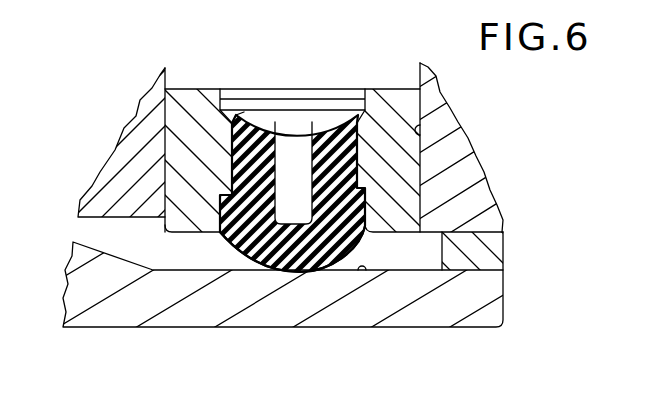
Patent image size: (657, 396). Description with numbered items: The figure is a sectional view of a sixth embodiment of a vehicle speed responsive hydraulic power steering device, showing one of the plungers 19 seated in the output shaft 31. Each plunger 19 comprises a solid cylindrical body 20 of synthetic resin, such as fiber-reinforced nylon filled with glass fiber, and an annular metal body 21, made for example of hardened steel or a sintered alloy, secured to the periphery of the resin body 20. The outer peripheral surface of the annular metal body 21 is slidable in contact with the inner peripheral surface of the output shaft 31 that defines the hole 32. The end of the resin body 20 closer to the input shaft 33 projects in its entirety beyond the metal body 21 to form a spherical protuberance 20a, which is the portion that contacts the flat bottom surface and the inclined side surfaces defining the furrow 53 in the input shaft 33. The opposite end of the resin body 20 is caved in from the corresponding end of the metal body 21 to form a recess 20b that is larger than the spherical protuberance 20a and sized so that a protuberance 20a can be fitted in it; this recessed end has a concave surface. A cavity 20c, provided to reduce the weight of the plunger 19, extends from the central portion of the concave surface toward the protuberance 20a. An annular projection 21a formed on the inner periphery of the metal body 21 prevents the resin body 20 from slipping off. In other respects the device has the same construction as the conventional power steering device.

The plunger 19 is at (412, 192).
The solid cylindrical body 20 is at (341, 197).
The spherical protuberance 20a is at (257, 266).
The recess 20b is at (250, 120).
The cavity 20c is at (312, 170).
The annular metal body 21 is at (359, 193).
The annular projection 21a is at (367, 172).
The output shaft 31 is at (122, 167).
The hole 32 is at (425, 122).
The input shaft 33 is at (487, 295).
The furrow 53 is at (360, 273).